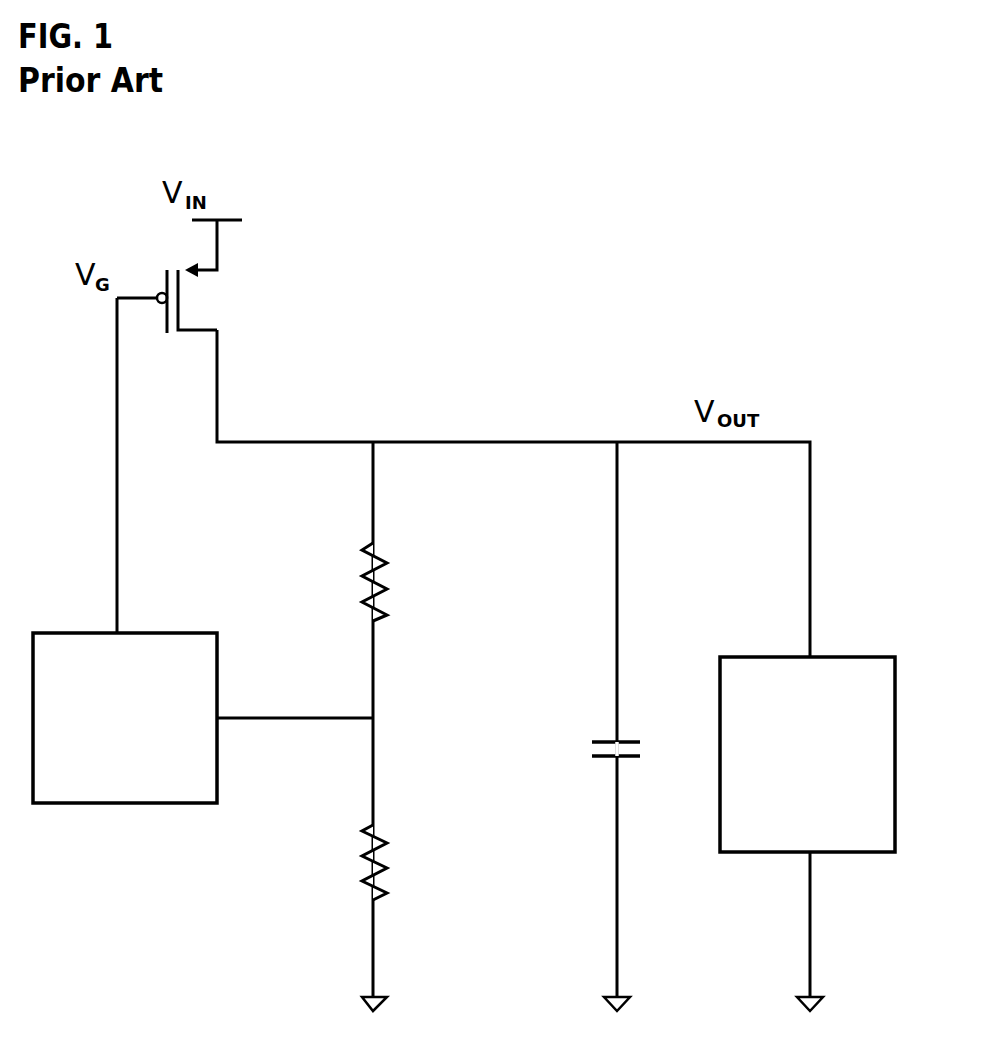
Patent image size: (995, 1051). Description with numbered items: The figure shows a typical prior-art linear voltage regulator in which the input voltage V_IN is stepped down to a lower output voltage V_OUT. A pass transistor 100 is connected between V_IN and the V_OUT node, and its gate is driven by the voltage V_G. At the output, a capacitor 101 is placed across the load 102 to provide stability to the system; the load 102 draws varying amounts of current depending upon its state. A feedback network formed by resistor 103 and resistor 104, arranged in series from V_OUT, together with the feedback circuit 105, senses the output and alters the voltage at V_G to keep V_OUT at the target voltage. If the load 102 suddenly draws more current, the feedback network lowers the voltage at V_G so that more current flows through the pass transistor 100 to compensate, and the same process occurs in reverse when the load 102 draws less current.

The pass transistor 100 is at (240, 290).
The capacitor 101 is at (575, 738).
The load 102 is at (834, 789).
The resistor 103 is at (467, 525).
The resistor 104 is at (410, 875).
The feedback circuit 105 is at (149, 772).